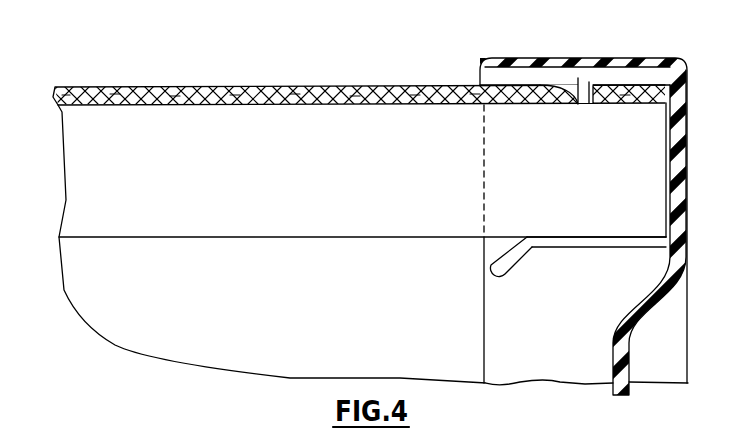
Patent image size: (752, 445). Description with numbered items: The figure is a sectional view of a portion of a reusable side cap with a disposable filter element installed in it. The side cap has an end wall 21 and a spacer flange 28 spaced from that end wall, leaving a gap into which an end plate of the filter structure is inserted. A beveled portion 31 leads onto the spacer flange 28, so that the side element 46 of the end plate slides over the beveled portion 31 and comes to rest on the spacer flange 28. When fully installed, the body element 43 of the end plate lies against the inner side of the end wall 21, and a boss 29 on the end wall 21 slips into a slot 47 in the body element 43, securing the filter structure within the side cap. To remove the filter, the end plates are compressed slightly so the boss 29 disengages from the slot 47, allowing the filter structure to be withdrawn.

The end wall 21 is at (548, 75).
The spacer flange 28 is at (578, 245).
The boss 29 is at (587, 106).
The beveled portion 31 is at (504, 267).
The body element 43 is at (392, 85).
The side element 46 is at (415, 221).
The slot 47 is at (553, 105).